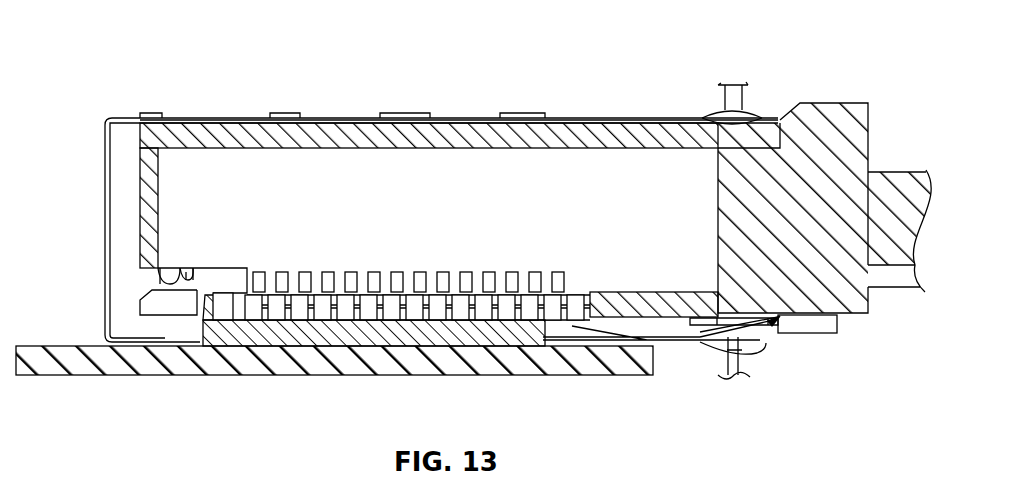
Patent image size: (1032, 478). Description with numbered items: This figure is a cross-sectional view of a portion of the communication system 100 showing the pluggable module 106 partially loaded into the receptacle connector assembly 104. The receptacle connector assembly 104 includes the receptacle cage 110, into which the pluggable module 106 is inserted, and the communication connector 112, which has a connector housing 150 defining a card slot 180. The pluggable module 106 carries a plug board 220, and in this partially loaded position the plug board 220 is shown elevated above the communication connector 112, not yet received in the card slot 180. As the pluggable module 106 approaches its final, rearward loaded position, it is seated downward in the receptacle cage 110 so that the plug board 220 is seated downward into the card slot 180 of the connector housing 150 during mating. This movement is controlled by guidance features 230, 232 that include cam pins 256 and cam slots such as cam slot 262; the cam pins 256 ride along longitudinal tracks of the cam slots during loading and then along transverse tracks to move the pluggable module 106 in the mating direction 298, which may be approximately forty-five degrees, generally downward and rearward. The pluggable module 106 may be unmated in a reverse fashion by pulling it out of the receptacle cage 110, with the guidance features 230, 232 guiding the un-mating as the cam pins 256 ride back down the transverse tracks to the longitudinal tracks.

The communication system 100 is at (797, 46).
The receptacle connector assembly 104 is at (66, 152).
The pluggable module 106 is at (884, 106).
The receptacle cage 110 is at (104, 210).
The communication connector 112 is at (345, 333).
The connector housing 150 is at (395, 332).
The card slot 180 is at (540, 310).
The plug board 220 is at (455, 172).
The guidance feature 230 is at (188, 281).
The guidance feature 232 is at (152, 279).
The cam pin 256 is at (168, 276).
The cam slot 262 is at (199, 277).
The mating direction 298 is at (603, 240).